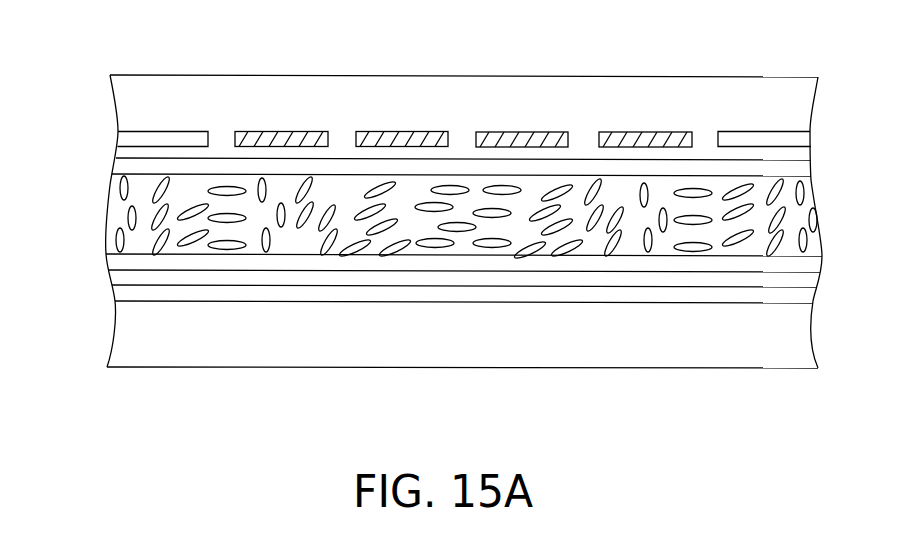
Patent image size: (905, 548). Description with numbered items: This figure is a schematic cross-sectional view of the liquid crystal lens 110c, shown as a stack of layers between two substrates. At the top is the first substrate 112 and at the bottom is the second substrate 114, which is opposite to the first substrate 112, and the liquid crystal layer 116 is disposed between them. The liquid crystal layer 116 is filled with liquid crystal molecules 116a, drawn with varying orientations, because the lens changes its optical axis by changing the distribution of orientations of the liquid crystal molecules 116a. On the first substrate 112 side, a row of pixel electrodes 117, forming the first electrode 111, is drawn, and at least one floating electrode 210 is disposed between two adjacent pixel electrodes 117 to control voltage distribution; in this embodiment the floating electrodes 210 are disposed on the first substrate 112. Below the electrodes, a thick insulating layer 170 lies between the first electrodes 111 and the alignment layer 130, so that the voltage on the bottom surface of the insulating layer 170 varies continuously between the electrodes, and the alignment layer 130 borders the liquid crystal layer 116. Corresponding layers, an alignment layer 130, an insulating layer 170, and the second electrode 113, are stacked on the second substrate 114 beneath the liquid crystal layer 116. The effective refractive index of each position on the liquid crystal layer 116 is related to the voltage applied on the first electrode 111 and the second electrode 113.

The liquid crystal lens 110c is at (837, 442).
The first substrate 112 is at (130, 98).
The pixel electrode 117 is at (162, 138).
The first electrode 111 is at (458, 81).
The floating electrode 210 is at (278, 132).
The thick insulating layer 170 is at (130, 153).
The alignment layer 130 is at (130, 168).
The liquid crystal layer 116 is at (425, 218).
The liquid crystal molecules 116a is at (120, 240).
The second electrode 113 is at (115, 293).
The second substrate 114 is at (127, 345).